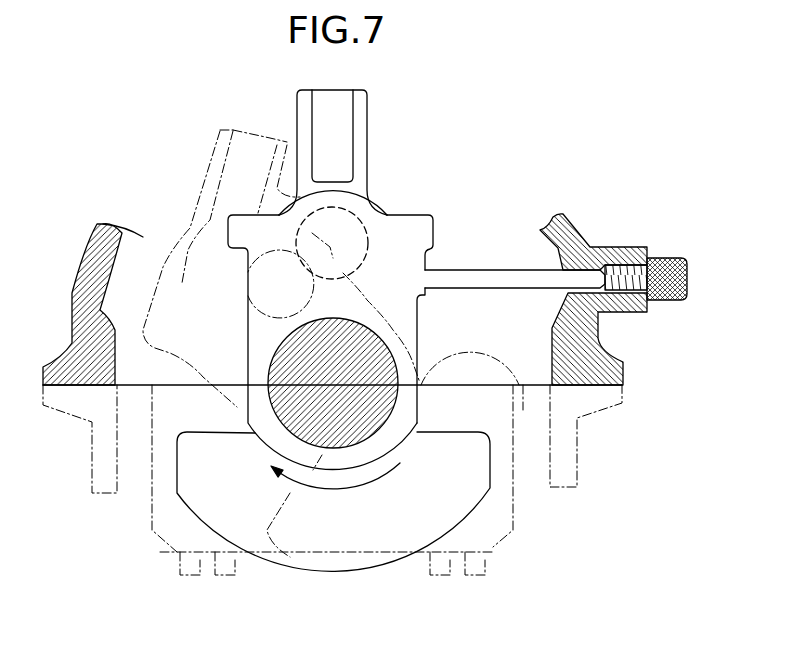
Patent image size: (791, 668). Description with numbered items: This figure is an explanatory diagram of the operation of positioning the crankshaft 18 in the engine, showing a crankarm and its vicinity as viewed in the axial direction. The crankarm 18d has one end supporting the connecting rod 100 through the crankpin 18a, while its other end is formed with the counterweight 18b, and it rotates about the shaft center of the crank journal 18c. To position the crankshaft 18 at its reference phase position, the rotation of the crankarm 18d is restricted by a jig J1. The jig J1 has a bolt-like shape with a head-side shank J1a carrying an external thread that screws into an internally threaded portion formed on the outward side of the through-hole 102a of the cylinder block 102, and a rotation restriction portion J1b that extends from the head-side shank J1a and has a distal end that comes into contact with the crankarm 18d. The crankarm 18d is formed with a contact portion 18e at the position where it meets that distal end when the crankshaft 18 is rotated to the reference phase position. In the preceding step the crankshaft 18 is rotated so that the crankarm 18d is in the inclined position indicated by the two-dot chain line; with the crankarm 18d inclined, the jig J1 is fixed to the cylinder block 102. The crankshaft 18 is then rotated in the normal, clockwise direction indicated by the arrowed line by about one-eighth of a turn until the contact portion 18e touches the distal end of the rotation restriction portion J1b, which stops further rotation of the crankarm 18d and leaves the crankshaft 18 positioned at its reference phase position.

The crankshaft 18 is at (437, 168).
The crankpin 18a is at (326, 260).
The counterweight 18b is at (280, 552).
The crank journal 18c is at (297, 402).
The crankarm 18d is at (422, 228).
The contact portion 18e is at (428, 291).
The connecting rod 100 is at (360, 146).
The cylinder block 102 is at (598, 243).
The through-hole 102a is at (577, 291).
The jig J1 is at (660, 256).
The head-side shank J1a is at (650, 301).
The rotation restriction portion J1b is at (510, 280).